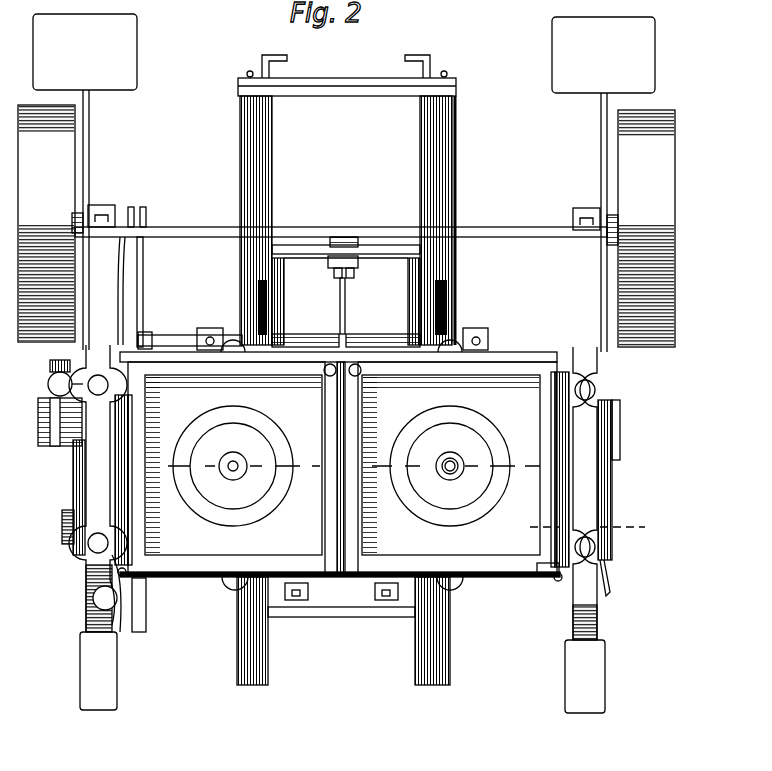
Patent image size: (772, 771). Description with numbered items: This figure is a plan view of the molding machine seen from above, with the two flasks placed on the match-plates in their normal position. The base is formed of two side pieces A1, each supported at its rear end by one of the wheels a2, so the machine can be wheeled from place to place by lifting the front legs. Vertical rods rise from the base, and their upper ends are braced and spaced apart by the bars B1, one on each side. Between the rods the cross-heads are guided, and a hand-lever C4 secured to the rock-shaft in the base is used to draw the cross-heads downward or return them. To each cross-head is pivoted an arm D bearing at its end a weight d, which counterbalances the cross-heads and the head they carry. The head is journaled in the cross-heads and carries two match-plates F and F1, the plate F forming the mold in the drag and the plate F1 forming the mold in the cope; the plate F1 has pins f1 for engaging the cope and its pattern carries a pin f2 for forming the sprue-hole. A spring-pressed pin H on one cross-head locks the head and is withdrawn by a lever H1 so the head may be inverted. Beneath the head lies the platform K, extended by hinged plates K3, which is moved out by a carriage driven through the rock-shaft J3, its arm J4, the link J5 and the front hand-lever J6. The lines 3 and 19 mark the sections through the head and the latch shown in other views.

The weight d is at (344, 53).
The arm D is at (92, 173).
The wheels a2 is at (346, 226).
The platform K is at (420, 203).
The pins f1 is at (348, 312).
The link J5 is at (130, 230).
The arm J4 is at (145, 275).
The rock-shaft J3 is at (165, 338).
The match-plate F is at (340, 459).
The match-plate F1 is at (457, 467).
The pin f2 is at (457, 458).
The plates K3 is at (253, 683).
The bars B1 is at (112, 308).
The hand-lever C4 is at (47, 386).
The section line 3 is at (343, 471).
The section line 19 is at (589, 527).
The spring-pressed pin H is at (612, 530).
The lever H1 is at (612, 568).
The side pieces A1 is at (82, 590).
The hand-lever J6 is at (86, 627).